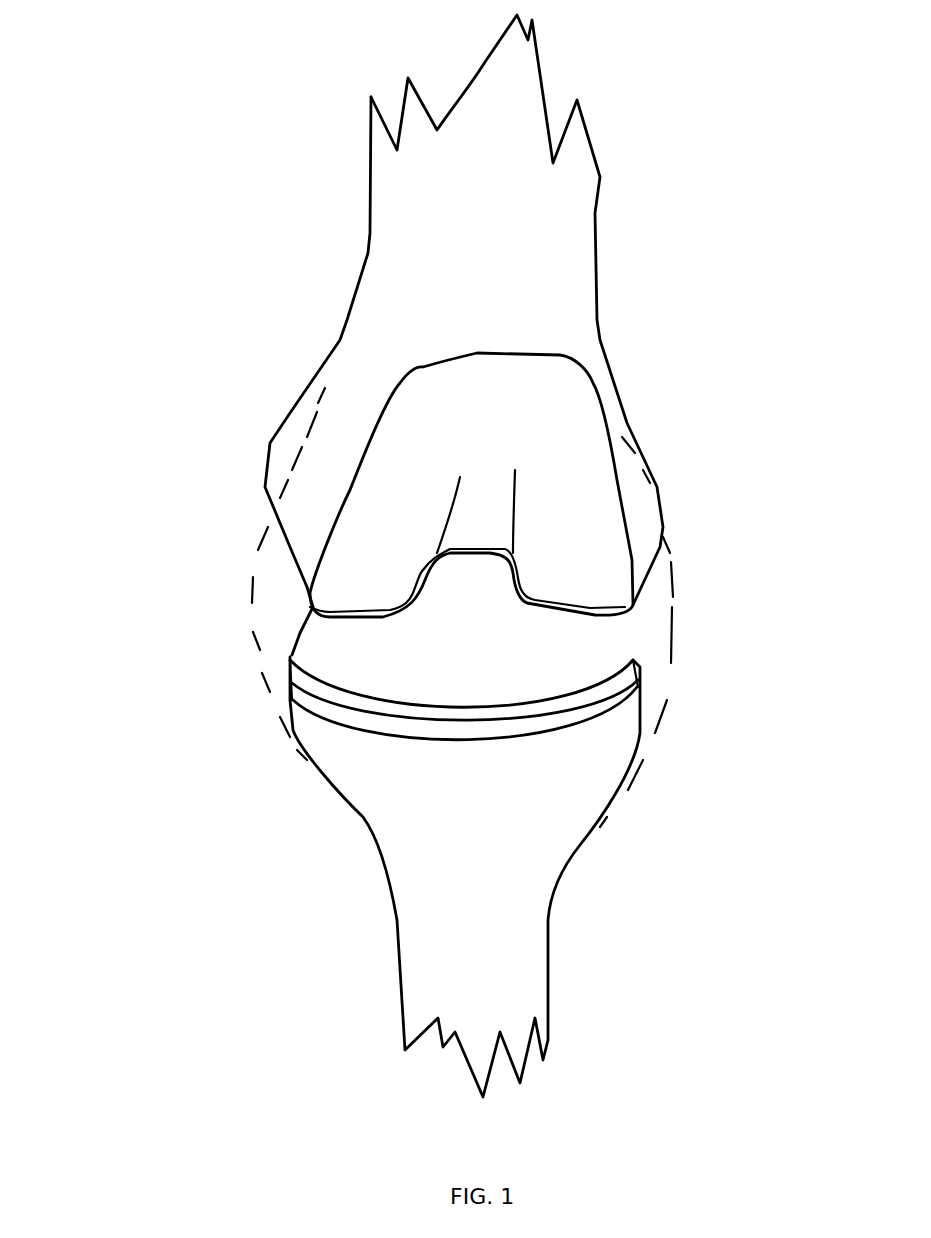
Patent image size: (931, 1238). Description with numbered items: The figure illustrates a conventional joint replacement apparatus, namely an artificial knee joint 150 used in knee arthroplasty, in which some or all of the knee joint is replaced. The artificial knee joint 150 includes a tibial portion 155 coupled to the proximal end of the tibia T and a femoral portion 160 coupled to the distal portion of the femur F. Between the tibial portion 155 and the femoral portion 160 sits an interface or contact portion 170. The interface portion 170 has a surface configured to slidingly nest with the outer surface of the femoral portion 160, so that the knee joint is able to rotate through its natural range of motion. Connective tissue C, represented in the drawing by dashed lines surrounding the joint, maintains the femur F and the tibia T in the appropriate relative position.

The artificial knee joint 150 is at (150, 602).
The tibial portion 155 is at (660, 657).
The femoral portion 160 is at (588, 513).
The interface portion 170 is at (320, 645).
The femur F is at (565, 253).
The tibia T is at (517, 950).
The connective tissue C is at (260, 553).